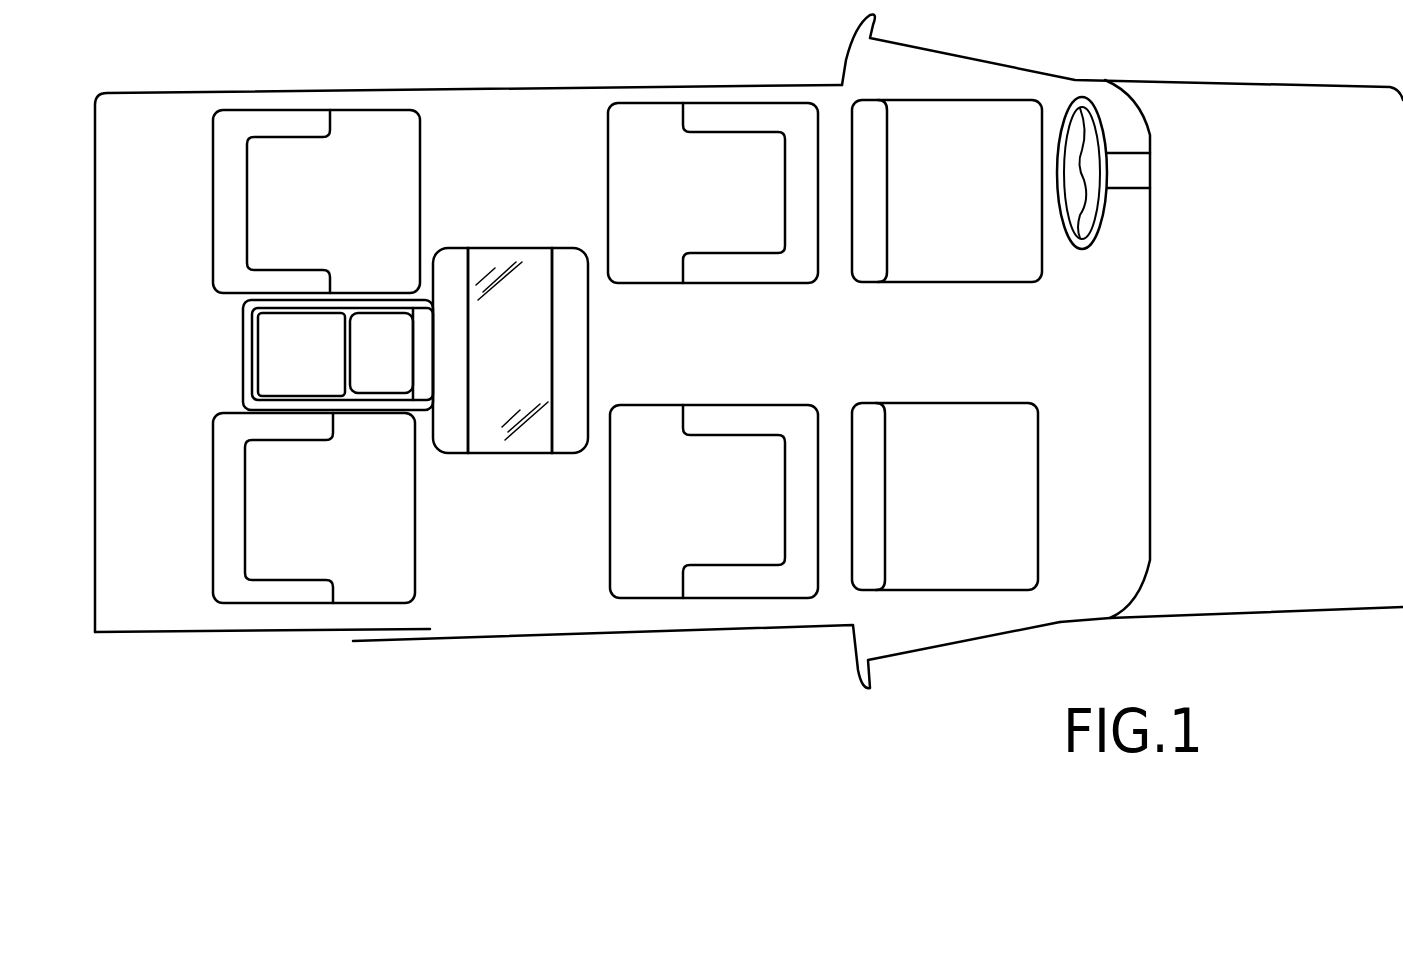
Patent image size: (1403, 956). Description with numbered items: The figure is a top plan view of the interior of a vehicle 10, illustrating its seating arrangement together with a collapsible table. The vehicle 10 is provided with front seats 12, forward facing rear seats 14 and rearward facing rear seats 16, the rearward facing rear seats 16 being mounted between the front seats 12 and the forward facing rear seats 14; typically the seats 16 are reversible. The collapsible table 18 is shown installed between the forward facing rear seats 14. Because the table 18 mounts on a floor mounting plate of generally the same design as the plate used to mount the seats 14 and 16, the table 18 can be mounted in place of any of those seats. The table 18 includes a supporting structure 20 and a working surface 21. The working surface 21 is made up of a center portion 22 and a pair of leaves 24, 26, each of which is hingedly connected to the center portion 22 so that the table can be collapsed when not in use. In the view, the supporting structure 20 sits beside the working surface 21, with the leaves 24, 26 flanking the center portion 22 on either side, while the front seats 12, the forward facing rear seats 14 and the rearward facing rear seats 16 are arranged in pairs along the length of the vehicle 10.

The vehicle 10 is at (1277, 76).
The front seats 12 is at (975, 215).
The forward facing rear seats 14 is at (345, 216).
The rearward facing rear seats 16 is at (730, 212).
The collapsible table 18 is at (428, 250).
The supporting structure 20 is at (250, 348).
The working surface 21 is at (508, 244).
The center portion 22 is at (535, 356).
The leaf 24 is at (563, 353).
The leaf 26 is at (455, 363).